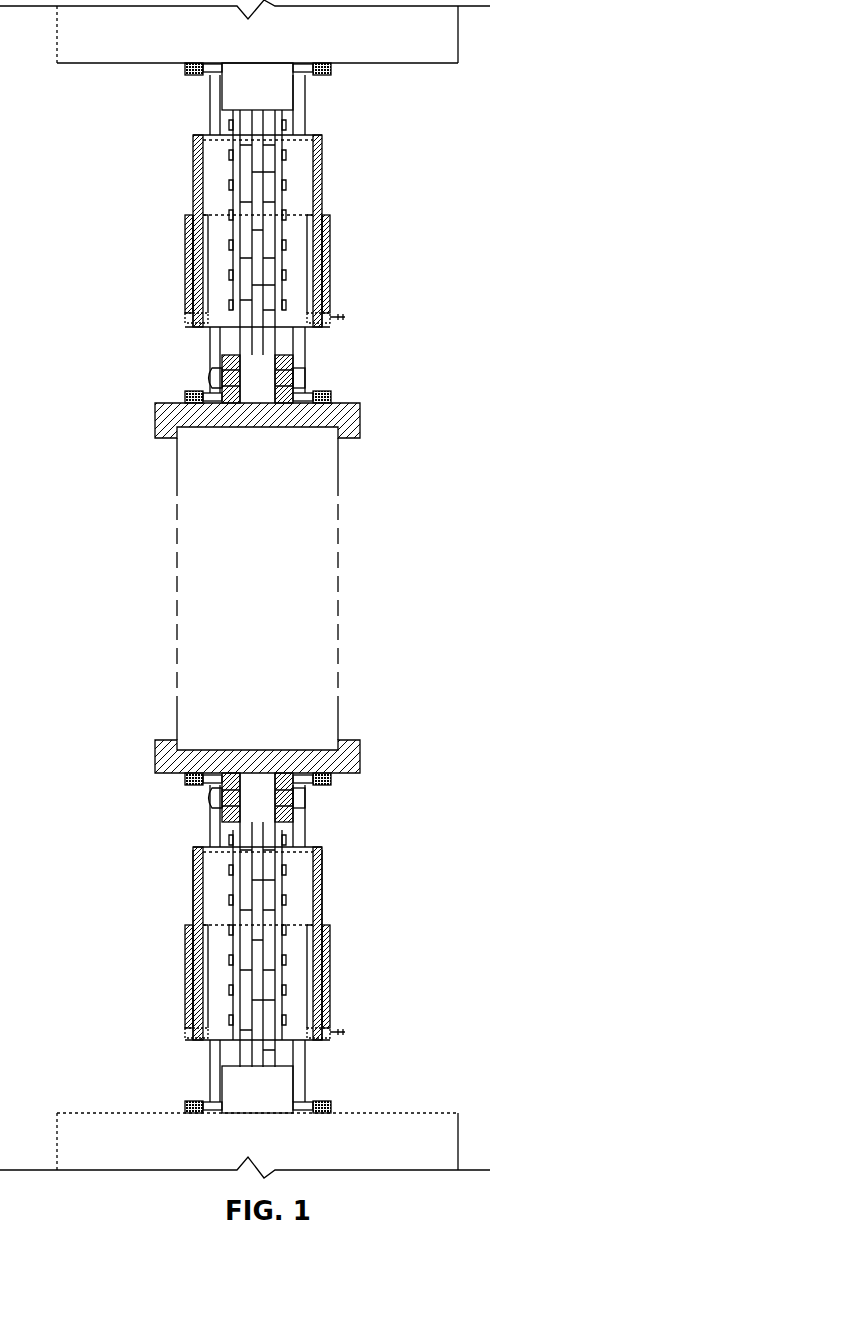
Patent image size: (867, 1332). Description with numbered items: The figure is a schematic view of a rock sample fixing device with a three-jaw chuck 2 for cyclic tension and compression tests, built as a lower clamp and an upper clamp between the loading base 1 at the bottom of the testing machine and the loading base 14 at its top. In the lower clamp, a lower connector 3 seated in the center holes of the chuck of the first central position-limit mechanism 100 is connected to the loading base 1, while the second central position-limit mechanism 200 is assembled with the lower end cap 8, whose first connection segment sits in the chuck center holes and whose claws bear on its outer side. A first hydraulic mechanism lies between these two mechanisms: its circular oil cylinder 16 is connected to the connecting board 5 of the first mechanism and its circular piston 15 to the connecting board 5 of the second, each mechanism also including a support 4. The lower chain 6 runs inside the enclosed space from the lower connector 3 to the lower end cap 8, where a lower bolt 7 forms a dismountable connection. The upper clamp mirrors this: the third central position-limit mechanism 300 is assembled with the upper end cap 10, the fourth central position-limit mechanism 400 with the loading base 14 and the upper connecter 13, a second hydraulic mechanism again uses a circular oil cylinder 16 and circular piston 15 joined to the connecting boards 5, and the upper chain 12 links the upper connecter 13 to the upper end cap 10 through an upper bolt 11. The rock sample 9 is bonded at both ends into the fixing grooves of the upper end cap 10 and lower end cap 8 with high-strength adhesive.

The loading base at a bottom of a testing machine 1 is at (405, 1141).
The three-jaw chuck 2 is at (185, 73).
The lower connector 3 is at (283, 1086).
The support 4 is at (215, 115).
The connecting board 5 is at (195, 137).
The lower chain 6 is at (283, 893).
The lower bolt 7 is at (283, 802).
The lower end cap 8 is at (323, 760).
The rock sample 9 is at (318, 587).
The upper end cap 10 is at (337, 415).
The upper bolt 11 is at (305, 375).
The upper chain 12 is at (273, 172).
The upper connecter 13 is at (273, 91).
The loading base at a top of the testing machine 14 is at (405, 35).
The circular piston 15 is at (318, 262).
The circular oil cylinder 16 is at (330, 295).
The first central position-limit mechanism 100 is at (88, 1000).
The second central position-limit mechanism 200 is at (108, 773).
The third central position-limit mechanism 300 is at (107, 315).
The fourth central position-limit mechanism 400 is at (108, 70).